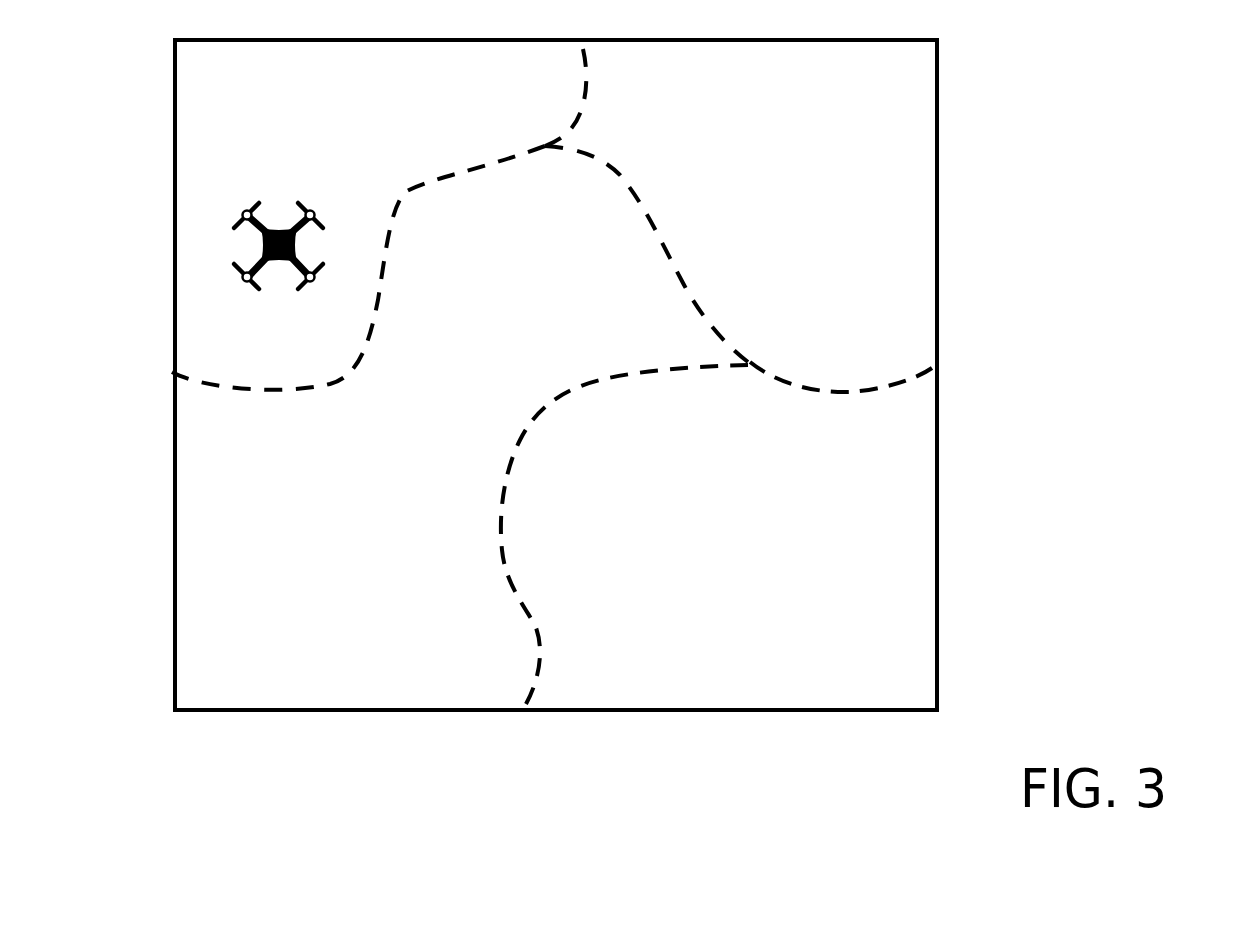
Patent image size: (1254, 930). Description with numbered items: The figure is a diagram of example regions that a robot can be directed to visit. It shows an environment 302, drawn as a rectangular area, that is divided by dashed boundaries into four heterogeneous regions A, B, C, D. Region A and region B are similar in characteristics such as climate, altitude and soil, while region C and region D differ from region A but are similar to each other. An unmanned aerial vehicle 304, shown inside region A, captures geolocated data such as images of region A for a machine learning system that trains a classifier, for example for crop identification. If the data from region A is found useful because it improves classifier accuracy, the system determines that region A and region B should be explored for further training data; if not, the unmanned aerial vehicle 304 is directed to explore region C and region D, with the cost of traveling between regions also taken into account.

The environment 302 is at (954, 221).
The unmanned aerial vehicle 304 is at (322, 207).
The region A is at (358, 242).
The region B is at (667, 205).
The region C is at (624, 483).
The region D is at (822, 481).